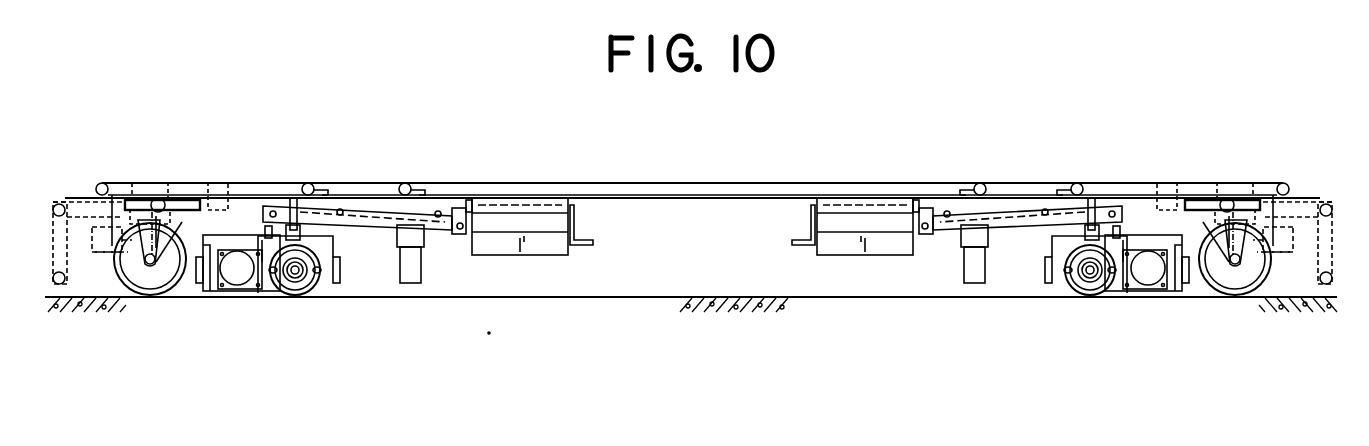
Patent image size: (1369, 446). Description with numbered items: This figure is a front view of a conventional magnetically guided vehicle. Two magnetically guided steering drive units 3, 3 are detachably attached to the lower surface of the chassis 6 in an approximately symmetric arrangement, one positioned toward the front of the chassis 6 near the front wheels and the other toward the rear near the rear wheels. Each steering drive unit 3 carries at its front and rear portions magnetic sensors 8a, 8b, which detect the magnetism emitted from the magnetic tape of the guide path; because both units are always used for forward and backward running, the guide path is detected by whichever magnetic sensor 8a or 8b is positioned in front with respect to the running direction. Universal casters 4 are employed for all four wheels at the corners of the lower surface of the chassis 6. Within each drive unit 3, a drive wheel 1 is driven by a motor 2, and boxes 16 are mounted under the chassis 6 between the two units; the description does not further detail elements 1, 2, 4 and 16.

The drive wheel 1 is at (303, 294).
The drive motor 2 is at (238, 300).
The magnetically guided steering drive unit 3 is at (347, 250).
The caster wheel 4 is at (147, 284).
The chassis 6 is at (163, 200).
The magnetic sensor 8a is at (199, 285).
The magnetic sensor 8b is at (343, 286).
The battery box 16 is at (593, 243).